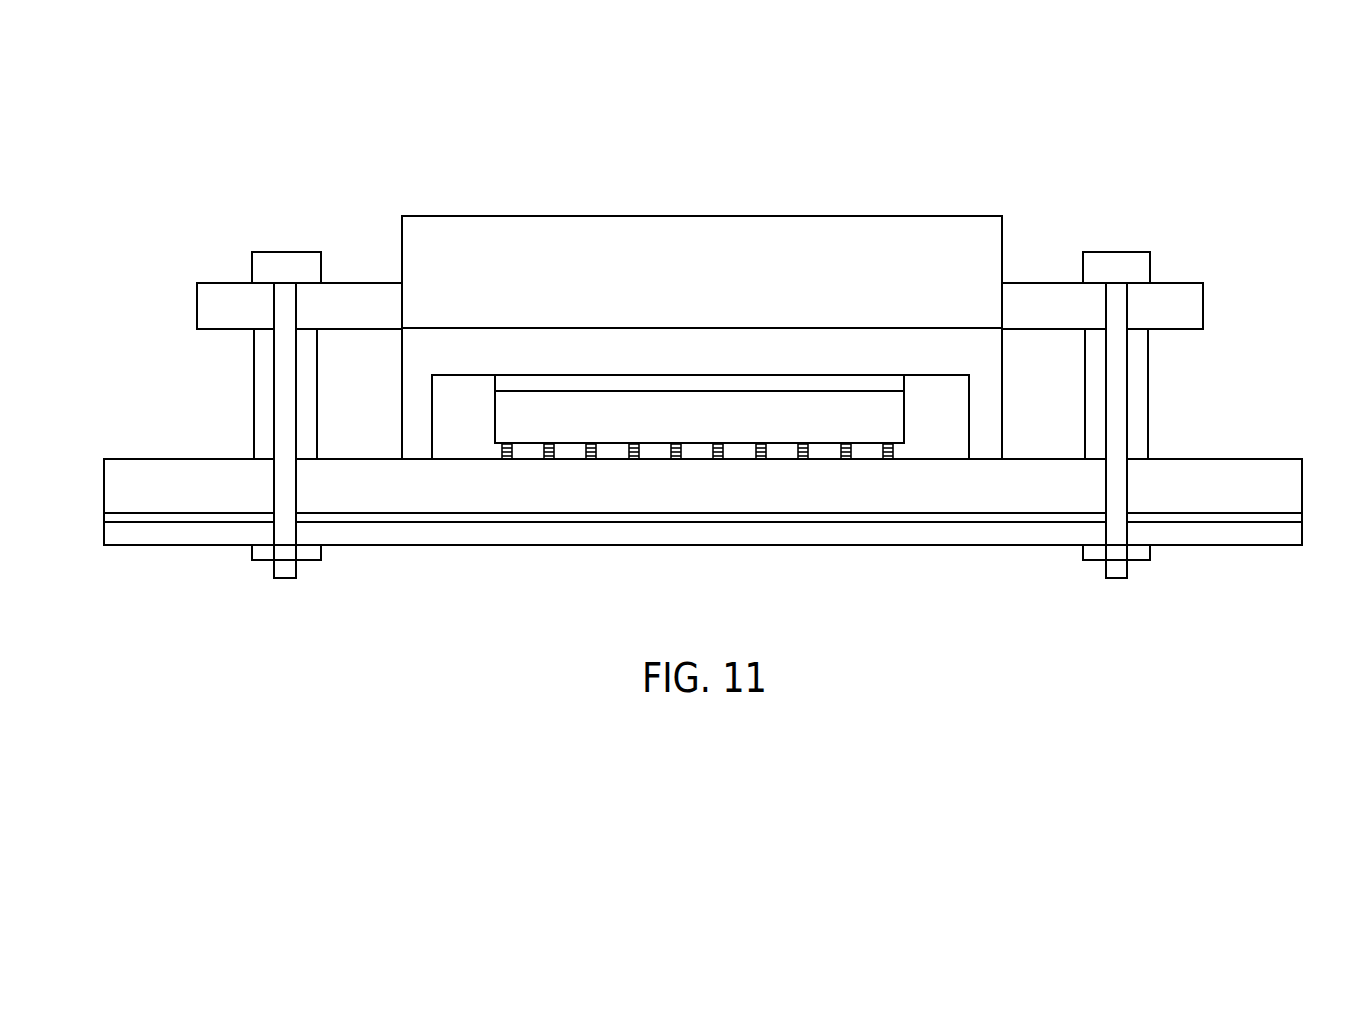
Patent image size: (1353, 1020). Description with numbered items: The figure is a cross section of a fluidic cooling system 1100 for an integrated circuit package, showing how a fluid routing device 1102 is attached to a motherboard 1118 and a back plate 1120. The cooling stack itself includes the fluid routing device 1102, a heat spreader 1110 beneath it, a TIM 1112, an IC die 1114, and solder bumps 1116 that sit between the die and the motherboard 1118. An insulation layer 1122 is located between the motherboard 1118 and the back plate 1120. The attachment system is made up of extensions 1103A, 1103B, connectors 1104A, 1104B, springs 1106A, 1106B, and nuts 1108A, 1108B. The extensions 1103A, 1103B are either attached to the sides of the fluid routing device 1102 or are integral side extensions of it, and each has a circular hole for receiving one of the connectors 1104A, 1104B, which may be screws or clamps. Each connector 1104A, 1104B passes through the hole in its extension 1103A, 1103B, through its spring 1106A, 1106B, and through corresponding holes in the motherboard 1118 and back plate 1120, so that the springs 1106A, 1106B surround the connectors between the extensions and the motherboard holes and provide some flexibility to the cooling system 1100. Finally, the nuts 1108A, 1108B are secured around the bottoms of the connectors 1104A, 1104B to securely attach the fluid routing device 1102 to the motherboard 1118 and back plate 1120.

The fluidic cooling system 1100 is at (350, 86).
The fluid routing device 1102 is at (863, 216).
The extension 1103A is at (216, 283).
The extension 1103B is at (1183, 283).
The connector 1104A is at (292, 252).
The connector 1104B is at (1115, 252).
The spring 1106A is at (254, 366).
The spring 1106B is at (1083, 354).
The nut 1108A is at (304, 562).
The nut 1108B is at (1135, 562).
The heat spreader 1110 is at (1003, 411).
The TIM 1112 is at (493, 382).
The IC die 1114 is at (905, 412).
The solder bumps 1116 is at (484, 446).
The motherboard 1118 is at (1283, 459).
The back plate 1120 is at (1247, 545).
The insulation layer 1122 is at (105, 521).